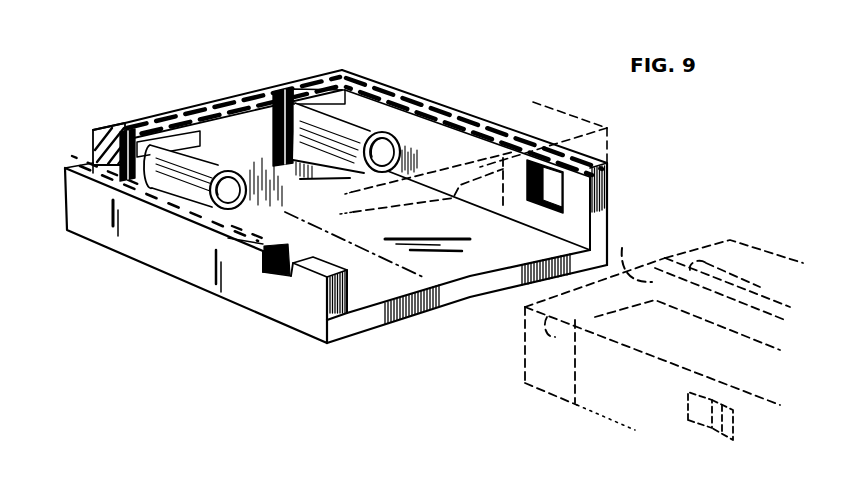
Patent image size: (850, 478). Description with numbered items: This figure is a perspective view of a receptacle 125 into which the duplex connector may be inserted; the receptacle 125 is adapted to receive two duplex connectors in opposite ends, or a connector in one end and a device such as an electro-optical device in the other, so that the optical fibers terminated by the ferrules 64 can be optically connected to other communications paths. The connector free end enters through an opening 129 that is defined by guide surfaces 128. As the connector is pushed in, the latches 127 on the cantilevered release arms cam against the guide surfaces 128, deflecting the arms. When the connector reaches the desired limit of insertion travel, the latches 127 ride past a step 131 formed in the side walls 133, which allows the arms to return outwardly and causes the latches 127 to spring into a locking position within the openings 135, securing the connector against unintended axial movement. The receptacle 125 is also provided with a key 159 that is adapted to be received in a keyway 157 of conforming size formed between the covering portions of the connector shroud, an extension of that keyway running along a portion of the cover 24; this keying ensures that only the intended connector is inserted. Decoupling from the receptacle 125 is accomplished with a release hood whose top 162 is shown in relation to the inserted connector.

The receptacle 125 is at (379, 224).
The guide surfaces 128 is at (577, 201).
The side walls 133 is at (612, 173).
The openings 135 is at (277, 272).
The step 131 is at (290, 275).
The opening 129 is at (414, 271).
The key 159 is at (420, 197).
The ferrules 64 is at (568, 341).
The cover 24 is at (786, 262).
The keyway 157 is at (642, 254).
The latches 127 is at (700, 422).
The top 162 is at (358, 471).